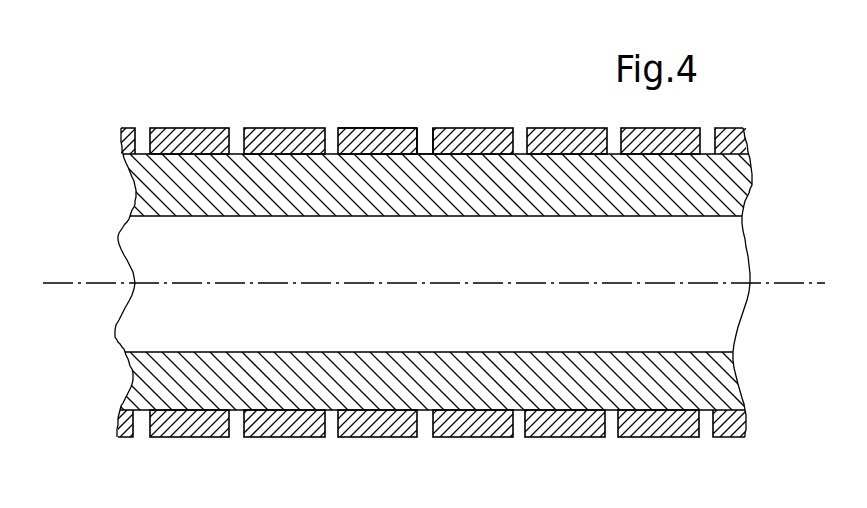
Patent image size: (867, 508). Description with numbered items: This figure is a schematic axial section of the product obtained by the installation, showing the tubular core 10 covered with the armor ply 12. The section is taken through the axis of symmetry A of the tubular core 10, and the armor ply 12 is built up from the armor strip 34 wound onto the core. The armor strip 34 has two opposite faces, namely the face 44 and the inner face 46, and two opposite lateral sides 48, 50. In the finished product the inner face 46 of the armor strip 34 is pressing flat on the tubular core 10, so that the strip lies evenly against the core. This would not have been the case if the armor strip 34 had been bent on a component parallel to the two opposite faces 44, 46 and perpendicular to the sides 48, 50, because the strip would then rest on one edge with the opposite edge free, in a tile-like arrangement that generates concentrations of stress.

The tubular core 10 is at (148, 189).
The armor ply 12 is at (433, 221).
The armor strip 34 is at (407, 128).
The face of the armor strip 44 is at (378, 116).
The inner face of the armor strip 46 is at (371, 170).
The lateral side of the armor strip 48 is at (310, 128).
The lateral side of the armor strip 50 is at (425, 150).
The axis of symmetry A is at (85, 283).